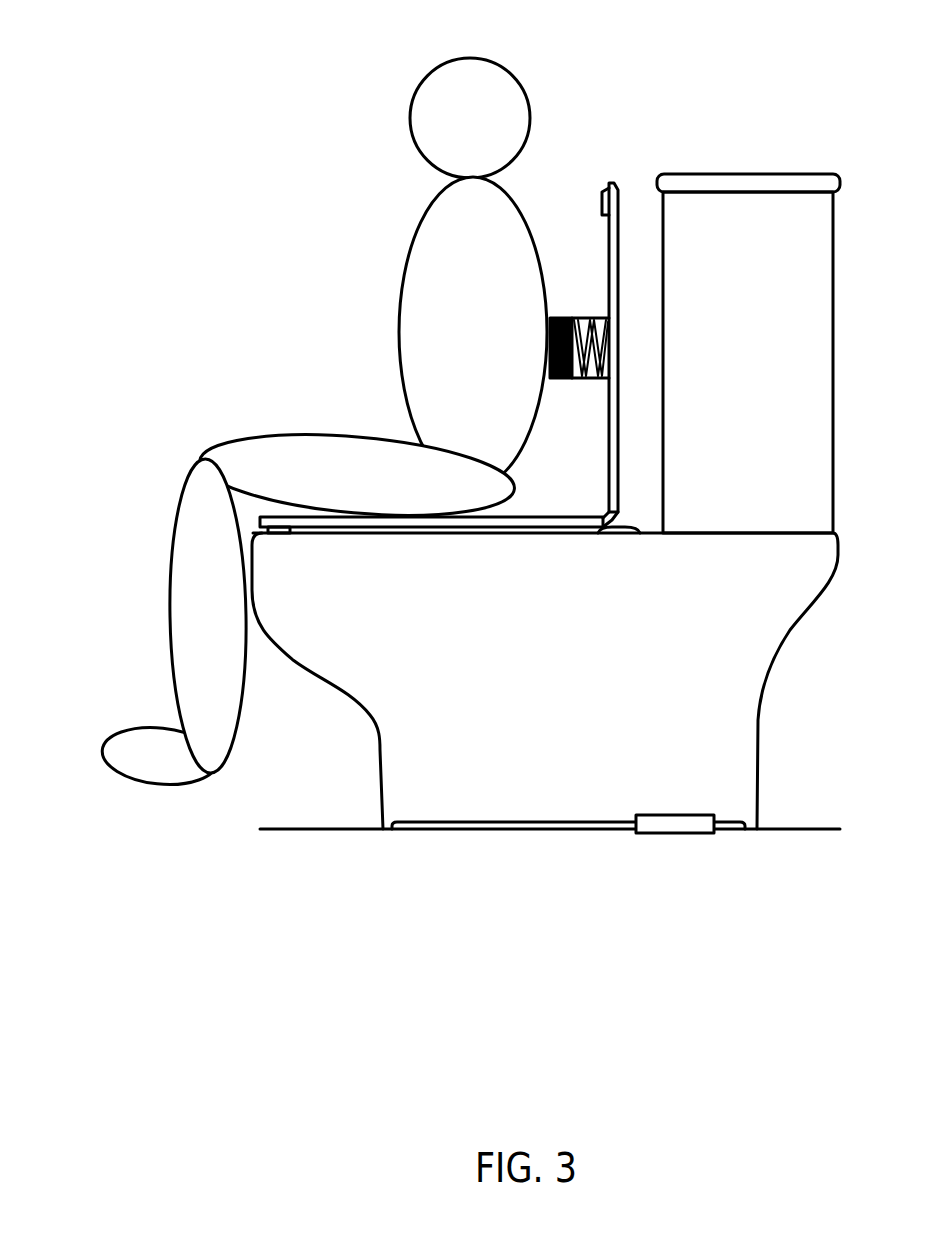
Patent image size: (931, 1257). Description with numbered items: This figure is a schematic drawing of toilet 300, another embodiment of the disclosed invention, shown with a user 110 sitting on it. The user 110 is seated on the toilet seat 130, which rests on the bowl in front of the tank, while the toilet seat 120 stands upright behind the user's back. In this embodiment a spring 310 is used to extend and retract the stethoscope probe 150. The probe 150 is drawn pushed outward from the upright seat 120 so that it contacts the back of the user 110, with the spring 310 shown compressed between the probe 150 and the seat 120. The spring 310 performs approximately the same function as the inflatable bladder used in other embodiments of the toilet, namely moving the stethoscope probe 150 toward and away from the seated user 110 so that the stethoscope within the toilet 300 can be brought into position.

The toilet 300 is at (140, 68).
The user 110 is at (420, 234).
The toilet seat 120 is at (620, 277).
The toilet seat 130 is at (425, 533).
The stethoscope probe 150 is at (557, 318).
The spring 310 is at (587, 380).